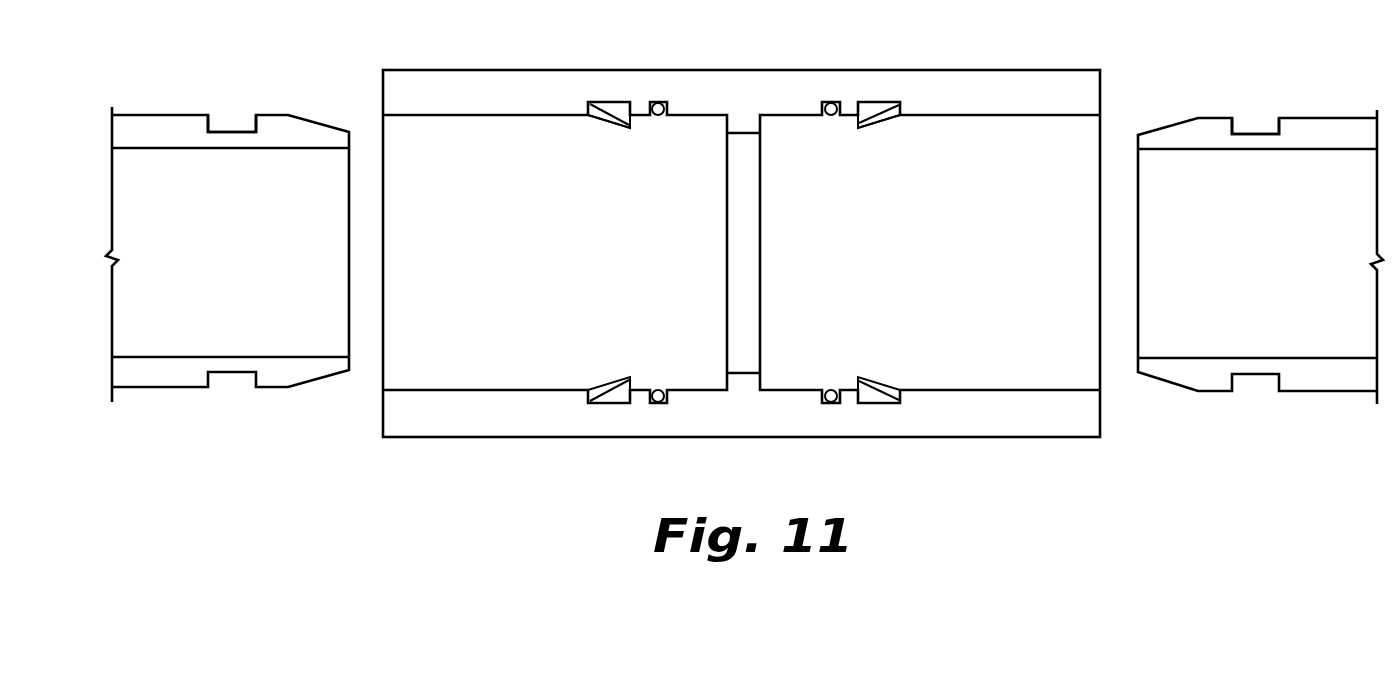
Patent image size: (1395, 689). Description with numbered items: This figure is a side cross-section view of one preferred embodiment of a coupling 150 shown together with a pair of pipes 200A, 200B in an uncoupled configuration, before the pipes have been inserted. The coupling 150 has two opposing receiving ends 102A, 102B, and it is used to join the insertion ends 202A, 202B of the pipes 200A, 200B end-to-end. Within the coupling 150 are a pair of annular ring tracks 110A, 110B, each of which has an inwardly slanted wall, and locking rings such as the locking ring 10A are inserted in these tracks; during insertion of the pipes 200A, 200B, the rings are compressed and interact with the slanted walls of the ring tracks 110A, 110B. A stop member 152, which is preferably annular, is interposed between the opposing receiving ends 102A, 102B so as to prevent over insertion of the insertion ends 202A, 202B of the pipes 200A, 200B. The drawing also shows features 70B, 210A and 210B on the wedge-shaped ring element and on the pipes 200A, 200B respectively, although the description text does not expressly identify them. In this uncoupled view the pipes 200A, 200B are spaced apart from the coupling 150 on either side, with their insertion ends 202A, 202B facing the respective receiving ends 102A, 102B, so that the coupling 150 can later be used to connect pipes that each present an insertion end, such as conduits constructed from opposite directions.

The coupling 150 is at (585, 48).
The receiving end 102A is at (450, 70).
The receiving end 102B is at (1017, 70).
The annular ring track 110A is at (610, 100).
The annular ring track 110B is at (873, 103).
The locking ring 10A is at (608, 128).
The second gripping member 70B is at (876, 128).
The stop member 152 is at (727, 382).
The pipe 200A is at (153, 115).
The pipe 200B is at (1312, 118).
The first pipe groove 210A is at (228, 132).
The second pipe groove 210B is at (1255, 132).
The insertion end 202A is at (308, 150).
The insertion end 202B is at (1158, 150).